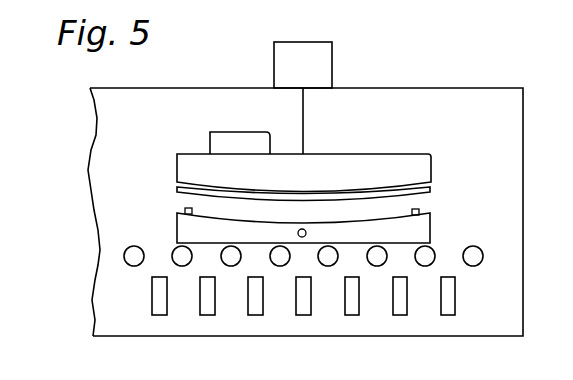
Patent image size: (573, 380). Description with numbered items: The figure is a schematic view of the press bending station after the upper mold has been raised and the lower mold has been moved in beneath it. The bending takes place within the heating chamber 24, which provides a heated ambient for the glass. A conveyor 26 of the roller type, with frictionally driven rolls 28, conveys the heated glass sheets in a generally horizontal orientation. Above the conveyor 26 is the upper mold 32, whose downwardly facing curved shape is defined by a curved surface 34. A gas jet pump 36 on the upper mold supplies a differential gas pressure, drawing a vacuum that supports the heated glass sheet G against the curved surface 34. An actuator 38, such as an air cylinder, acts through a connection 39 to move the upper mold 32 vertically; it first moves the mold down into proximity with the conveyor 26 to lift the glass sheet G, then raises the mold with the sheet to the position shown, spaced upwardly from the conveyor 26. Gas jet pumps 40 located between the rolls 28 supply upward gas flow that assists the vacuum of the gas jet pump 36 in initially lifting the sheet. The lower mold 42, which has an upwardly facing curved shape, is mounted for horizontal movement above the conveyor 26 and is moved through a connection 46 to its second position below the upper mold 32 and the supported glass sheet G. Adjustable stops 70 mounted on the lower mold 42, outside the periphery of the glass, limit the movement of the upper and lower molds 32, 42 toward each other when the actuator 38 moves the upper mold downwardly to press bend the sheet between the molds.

The heating chamber 24 is at (455, 107).
The conveyor 26 is at (113, 251).
The rolls 28 is at (174, 263).
The upper mold 32 is at (413, 163).
The curved surface 34 is at (432, 189).
The gas jet pump 36 is at (230, 132).
The actuator 38 is at (323, 62).
The connection 39 is at (305, 120).
The gas jet pumps 40 is at (399, 317).
The lower mold 42 is at (431, 225).
The connection 46 is at (304, 237).
The adjustable stops 70 is at (185, 210).
The glass sheet G is at (177, 190).